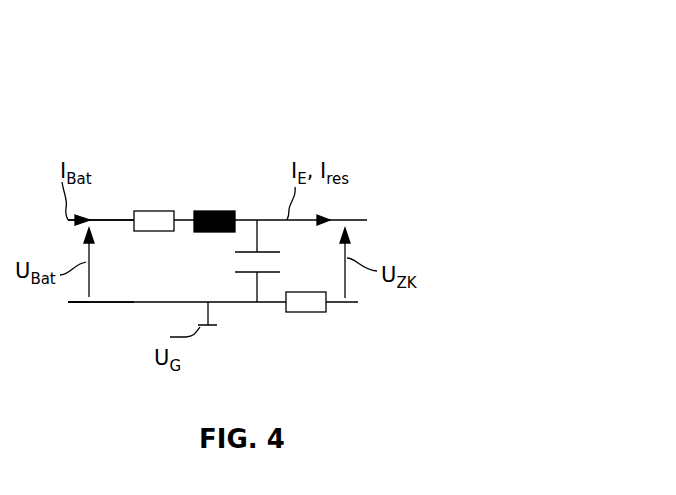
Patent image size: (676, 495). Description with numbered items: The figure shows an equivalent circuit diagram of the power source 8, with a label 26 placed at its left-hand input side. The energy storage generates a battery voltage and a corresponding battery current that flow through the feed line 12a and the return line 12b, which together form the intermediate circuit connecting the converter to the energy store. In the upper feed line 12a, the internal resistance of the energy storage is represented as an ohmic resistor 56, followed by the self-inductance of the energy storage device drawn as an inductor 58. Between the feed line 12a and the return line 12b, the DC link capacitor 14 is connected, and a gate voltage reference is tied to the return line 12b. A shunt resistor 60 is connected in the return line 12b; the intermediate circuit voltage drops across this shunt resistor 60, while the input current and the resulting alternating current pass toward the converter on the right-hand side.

The power source 8 is at (246, 118).
The battery connection side 26 is at (47, 232).
The feed line 12a is at (105, 219).
The return line 12b is at (78, 305).
The ohmic resistor 56 is at (156, 211).
The inductor 58 is at (215, 211).
The DC link capacitor 14 is at (245, 263).
The shunt resistor 60 is at (305, 312).